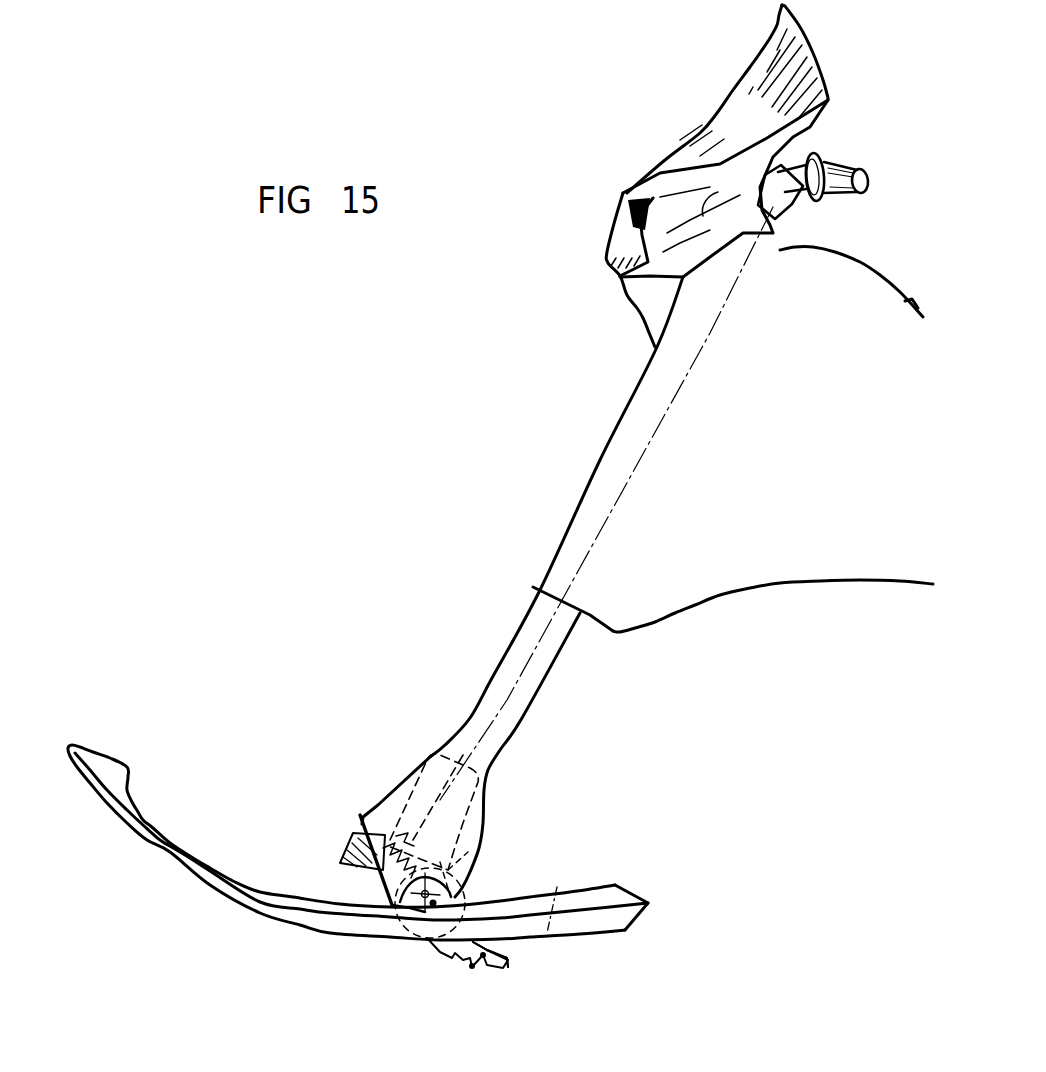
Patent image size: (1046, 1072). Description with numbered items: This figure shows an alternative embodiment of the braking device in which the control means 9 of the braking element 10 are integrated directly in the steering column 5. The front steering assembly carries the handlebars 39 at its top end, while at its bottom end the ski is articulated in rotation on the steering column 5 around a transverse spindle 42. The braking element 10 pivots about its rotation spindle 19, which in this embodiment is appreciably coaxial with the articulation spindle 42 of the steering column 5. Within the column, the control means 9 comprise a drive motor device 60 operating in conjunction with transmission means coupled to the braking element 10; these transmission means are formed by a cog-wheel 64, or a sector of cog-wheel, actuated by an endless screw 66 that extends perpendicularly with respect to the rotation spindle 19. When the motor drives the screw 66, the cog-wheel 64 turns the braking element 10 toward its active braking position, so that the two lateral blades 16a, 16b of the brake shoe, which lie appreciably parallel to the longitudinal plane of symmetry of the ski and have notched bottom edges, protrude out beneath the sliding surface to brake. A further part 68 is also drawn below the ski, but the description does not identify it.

The steering column 5 is at (478, 660).
The control means 9 is at (420, 735).
The braking element 10 is at (358, 890).
The rotation spindle 19 is at (470, 902).
The handlebars 39 is at (857, 165).
The transverse spindle 42 is at (467, 900).
The drive motor device 60 is at (418, 803).
The cog-wheel 64 is at (467, 897).
The endless screw 66 is at (388, 820).
The base plate 68 is at (473, 967).
The lateral blade 16a is at (480, 962).
The lateral blade 16b is at (480, 962).